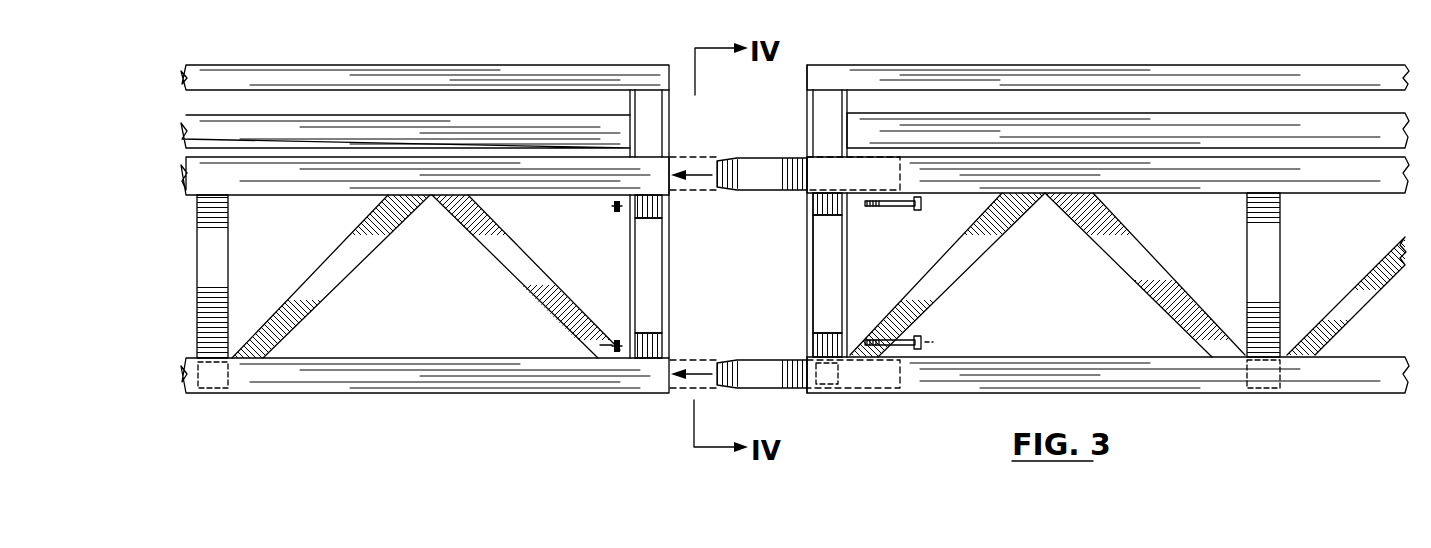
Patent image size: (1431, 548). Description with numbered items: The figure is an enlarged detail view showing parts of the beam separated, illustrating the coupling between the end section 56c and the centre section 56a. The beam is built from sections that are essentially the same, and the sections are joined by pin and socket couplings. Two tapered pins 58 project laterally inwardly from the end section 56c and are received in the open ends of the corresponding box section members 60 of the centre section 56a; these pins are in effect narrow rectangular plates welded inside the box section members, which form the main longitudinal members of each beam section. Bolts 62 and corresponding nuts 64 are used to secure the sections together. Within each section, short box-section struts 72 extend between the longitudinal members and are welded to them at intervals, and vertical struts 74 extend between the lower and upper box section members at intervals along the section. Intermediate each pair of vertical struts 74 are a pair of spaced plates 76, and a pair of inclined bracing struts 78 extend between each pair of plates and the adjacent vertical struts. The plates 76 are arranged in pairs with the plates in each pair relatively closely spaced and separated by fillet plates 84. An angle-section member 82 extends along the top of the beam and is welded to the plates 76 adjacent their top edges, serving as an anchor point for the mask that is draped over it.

The centre section 56a is at (401, 63).
The end section 56c is at (1121, 63).
The angle-section member 82 is at (538, 78).
The pin 58 is at (778, 162).
The box section member 60 is at (553, 353).
The nut 64 is at (613, 207).
The plate 76 is at (640, 247).
The fillet plate 84 is at (835, 205).
The bolt 62 is at (896, 207).
The vertical strut 74 is at (222, 248).
The inclined bracing strut 78 is at (470, 237).
The strut 72 is at (230, 380).